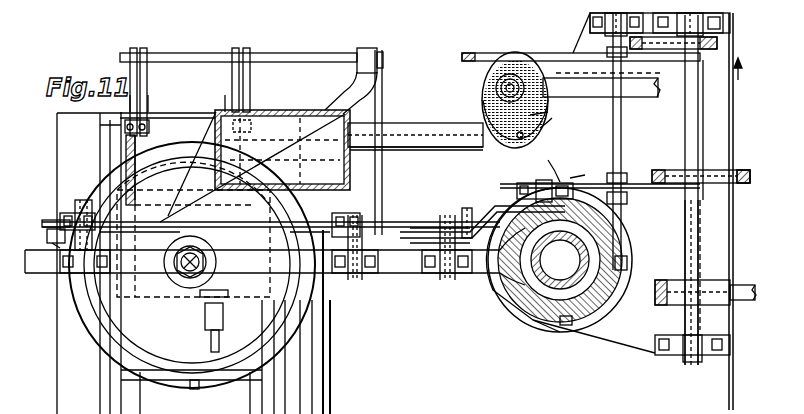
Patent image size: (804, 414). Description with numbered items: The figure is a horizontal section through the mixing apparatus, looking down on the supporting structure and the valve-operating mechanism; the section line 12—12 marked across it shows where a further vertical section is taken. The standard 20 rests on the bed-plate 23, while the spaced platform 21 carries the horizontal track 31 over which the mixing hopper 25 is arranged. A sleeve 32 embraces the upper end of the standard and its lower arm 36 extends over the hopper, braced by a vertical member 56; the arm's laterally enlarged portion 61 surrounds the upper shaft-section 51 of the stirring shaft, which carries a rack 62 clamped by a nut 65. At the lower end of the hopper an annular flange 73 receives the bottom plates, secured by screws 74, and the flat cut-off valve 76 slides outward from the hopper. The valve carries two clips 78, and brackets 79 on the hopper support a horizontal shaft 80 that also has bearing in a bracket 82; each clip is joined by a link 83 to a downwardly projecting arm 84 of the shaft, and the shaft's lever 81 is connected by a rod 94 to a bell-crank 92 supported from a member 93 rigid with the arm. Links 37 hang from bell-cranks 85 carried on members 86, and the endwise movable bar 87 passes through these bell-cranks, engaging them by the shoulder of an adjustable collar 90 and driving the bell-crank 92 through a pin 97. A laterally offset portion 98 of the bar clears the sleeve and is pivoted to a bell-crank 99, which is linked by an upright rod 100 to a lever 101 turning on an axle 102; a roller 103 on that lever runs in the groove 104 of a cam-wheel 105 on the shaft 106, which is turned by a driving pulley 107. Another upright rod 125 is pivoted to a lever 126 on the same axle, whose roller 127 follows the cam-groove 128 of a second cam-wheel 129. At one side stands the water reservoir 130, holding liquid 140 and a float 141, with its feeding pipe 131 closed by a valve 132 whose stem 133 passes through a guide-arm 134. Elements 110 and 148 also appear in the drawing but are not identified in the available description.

The shaft 12 is at (655, 77).
The standard 20 is at (528, 312).
The platform 21 is at (323, 372).
The bed-plate 23 is at (620, 333).
The mixing hopper 25 is at (110, 333).
The horizontal track 31 is at (100, 137).
The sleeve 32 is at (545, 322).
The arm 36 is at (35, 276).
The links 37 is at (42, 238).
The upper shaft-section 51 is at (200, 255).
The vertical member 56 is at (308, 320).
The laterally enlarged portion 61 is at (183, 298).
The rack 62 is at (206, 258).
The nut 65 is at (199, 272).
The external annular flange 73 is at (143, 380).
The screws 74 is at (200, 385).
The valve 76 is at (115, 154).
The clips 78 is at (216, 110).
The bracket 79 is at (243, 48).
The horizontal shaft 80 is at (383, 60).
The lever 81 is at (383, 102).
The bracket 82 is at (346, 88).
The link 83 is at (230, 92).
The arm 84 is at (230, 74).
The bell-crank 85 is at (65, 205).
The member 86 is at (76, 278).
The bar 87 is at (148, 230).
The collar 90 is at (40, 205).
The bell-crank 92 is at (466, 206).
The member 93 is at (448, 276).
The rod 94 is at (392, 205).
The pin 97 is at (466, 212).
The laterally offset portion 98 is at (488, 206).
The bell-crank 99 is at (554, 168).
The upright rod 100 is at (522, 186).
The lever 101 is at (625, 198).
The axle 102 is at (612, 141).
The anti-friction roller 103 is at (692, 198).
The groove 104 is at (668, 172).
The cam-wheel 105 is at (758, 168).
The shaft 106 is at (686, 234).
The driving pulley 107 is at (680, 280).
The box housing 110 is at (190, 184).
The upright rod 125 is at (465, 55).
The lever 126 is at (566, 55).
The antifriction roller 127 is at (692, 78).
The cam-groove 128 is at (717, 43).
The cam-wheel 129 is at (708, 80).
The water-supplying reservoir 130 is at (485, 110).
The water-feeding pipe 131 is at (425, 148).
The valve 132 is at (548, 128).
The stem 133 is at (415, 135).
The guide-arm 134 is at (586, 168).
The water 140 is at (546, 112).
The float 141 is at (494, 80).
The pulley hub 148 is at (500, 90).